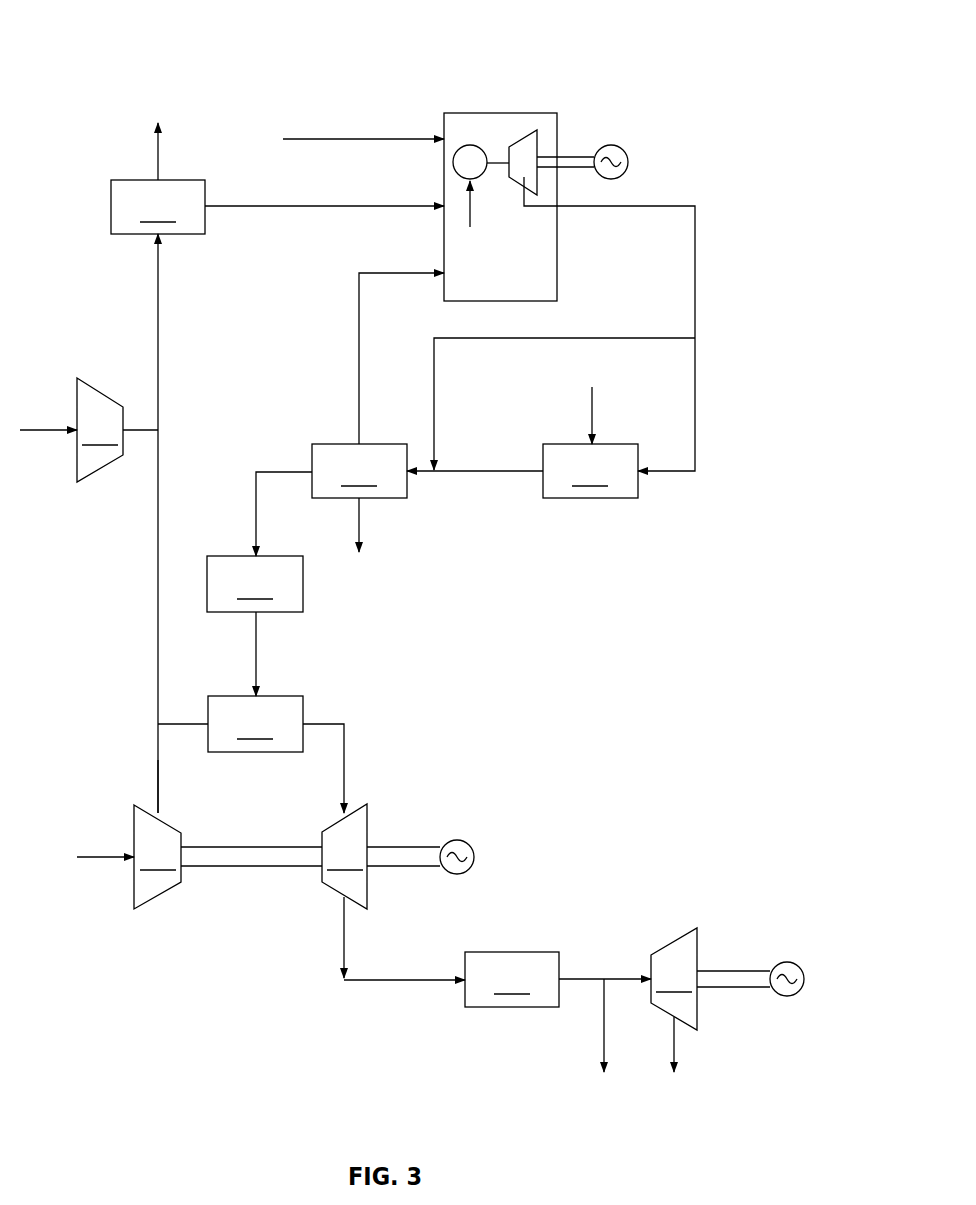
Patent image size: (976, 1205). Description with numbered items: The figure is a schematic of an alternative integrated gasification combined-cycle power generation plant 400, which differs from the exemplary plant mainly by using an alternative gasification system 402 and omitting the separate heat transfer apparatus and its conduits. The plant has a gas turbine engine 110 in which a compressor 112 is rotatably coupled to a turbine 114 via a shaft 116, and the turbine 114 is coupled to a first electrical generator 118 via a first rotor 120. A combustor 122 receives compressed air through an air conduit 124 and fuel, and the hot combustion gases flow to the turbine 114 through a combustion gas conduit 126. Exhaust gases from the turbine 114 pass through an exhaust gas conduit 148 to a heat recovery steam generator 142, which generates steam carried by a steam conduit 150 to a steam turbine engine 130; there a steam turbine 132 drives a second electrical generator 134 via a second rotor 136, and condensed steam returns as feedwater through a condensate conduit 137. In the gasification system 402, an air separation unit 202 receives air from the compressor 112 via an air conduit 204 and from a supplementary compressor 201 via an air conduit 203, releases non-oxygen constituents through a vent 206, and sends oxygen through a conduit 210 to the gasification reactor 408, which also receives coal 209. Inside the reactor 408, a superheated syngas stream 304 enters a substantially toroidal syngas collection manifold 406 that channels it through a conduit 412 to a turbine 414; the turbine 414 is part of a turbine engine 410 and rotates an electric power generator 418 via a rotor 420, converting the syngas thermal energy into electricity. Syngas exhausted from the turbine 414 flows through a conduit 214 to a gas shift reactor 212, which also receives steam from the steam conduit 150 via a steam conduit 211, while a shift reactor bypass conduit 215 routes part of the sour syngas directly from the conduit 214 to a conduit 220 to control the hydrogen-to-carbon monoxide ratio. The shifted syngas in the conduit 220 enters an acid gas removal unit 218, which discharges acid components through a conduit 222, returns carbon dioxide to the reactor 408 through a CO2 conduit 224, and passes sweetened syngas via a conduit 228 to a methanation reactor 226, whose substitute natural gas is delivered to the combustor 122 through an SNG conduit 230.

The IGCC power generation plant 400 is at (105, 45).
The gasification system 402 is at (210, 105).
The gas turbine engine 110 is at (162, 944).
The compressor 112 is at (129, 857).
The turbine 114 is at (345, 856).
The shaft 116 is at (240, 868).
The first electrical generator 118 is at (455, 840).
The first rotor 120 is at (406, 868).
The combustor 122 is at (255, 724).
The air conduit 124 is at (158, 780).
The combustion gas conduit 126 is at (348, 770).
The steam turbine engine 130 is at (627, 1093).
The steam turbine 132 is at (674, 979).
The second electrical generator 134 is at (786, 962).
The second rotor 136 is at (725, 970).
The condensate conduit 137 is at (676, 1040).
The heat recovery steam generator 142 is at (512, 979).
The exhaust gas conduit 148 is at (344, 940).
The steam conduit 150 is at (622, 978).
The compressor 201 is at (71, 430).
The air separation unit 202 is at (158, 207).
The air conduit 203 is at (140, 430).
The air conduit 204 is at (158, 562).
The vent 206 is at (158, 148).
The coal 209 is at (380, 138).
The conduit 210 is at (338, 206).
The steam conduit 211 is at (593, 415).
The gas shift reactor 212 is at (590, 471).
The conduit 214 is at (695, 280).
The shift reactor bypass conduit 215 is at (508, 340).
The acid gas removal unit 218 is at (359, 471).
The conduit 220 is at (508, 470).
The conduit 222 is at (365, 524).
The CO2 conduit 224 is at (359, 358).
The methanation reactor 226 is at (255, 584).
The conduit 228 is at (256, 515).
The SNG conduit 230 is at (256, 648).
The syngas stream 304 is at (466, 212).
The syngas collection manifold 406 is at (462, 146).
The gasification reactor 408 is at (500, 113).
The turbine engine 410 is at (578, 85).
The conduit 412 is at (506, 158).
The turbine 414 is at (540, 178).
The electric power generator 418 is at (620, 148).
The rotor 420 is at (575, 155).